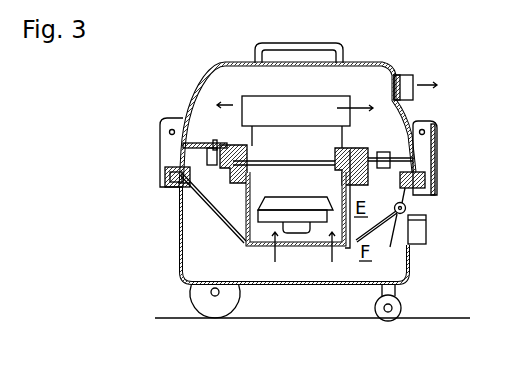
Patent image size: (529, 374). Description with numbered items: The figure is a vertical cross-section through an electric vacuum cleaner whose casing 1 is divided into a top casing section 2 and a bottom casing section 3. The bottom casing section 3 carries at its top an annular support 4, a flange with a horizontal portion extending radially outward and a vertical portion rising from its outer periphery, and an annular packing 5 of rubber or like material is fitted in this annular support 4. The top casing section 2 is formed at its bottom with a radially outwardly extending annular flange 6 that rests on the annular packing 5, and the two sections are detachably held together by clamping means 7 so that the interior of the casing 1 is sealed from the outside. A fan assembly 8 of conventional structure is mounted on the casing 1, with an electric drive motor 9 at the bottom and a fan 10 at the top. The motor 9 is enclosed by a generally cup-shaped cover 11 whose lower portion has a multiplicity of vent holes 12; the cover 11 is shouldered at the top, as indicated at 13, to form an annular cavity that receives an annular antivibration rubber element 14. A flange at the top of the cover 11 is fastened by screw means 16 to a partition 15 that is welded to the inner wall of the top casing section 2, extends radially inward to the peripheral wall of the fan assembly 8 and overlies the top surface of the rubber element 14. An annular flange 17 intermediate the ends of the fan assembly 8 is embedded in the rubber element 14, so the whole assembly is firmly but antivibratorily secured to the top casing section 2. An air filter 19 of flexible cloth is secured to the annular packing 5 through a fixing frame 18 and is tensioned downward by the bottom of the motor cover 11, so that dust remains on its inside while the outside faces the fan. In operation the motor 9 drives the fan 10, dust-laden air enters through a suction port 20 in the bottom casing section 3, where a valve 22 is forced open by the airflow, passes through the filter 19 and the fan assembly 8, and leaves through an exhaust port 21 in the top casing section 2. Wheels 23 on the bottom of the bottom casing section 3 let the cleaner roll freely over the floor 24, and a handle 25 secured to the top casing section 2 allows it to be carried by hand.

The casing 1 is at (197, 93).
The top casing section 2 is at (212, 63).
The bottom casing section 3 is at (253, 287).
The annular support 4 is at (167, 185).
The annular packing 5 is at (180, 185).
The annular flange 6 is at (178, 165).
The clamping means 7 is at (167, 130).
The fan assembly 8 is at (300, 130).
The electric drive motor 9 is at (400, 197).
The fan 10 is at (253, 102).
The cover 11 is at (246, 206).
The vent holes 12 is at (245, 242).
The shoulder 13 is at (187, 144).
The antivibration rubber element 14 is at (222, 148).
The partition 15 is at (344, 152).
The screw means 16 is at (418, 157).
The annular flange 17 is at (365, 150).
The fixing frame 18 is at (172, 177).
The air filter 19 is at (183, 190).
The suction port 20 is at (420, 235).
The exhaust port 21 is at (398, 85).
The valve 22 is at (417, 224).
The wheels 23 is at (218, 316).
The floor 24 is at (293, 318).
The handle 25 is at (313, 45).